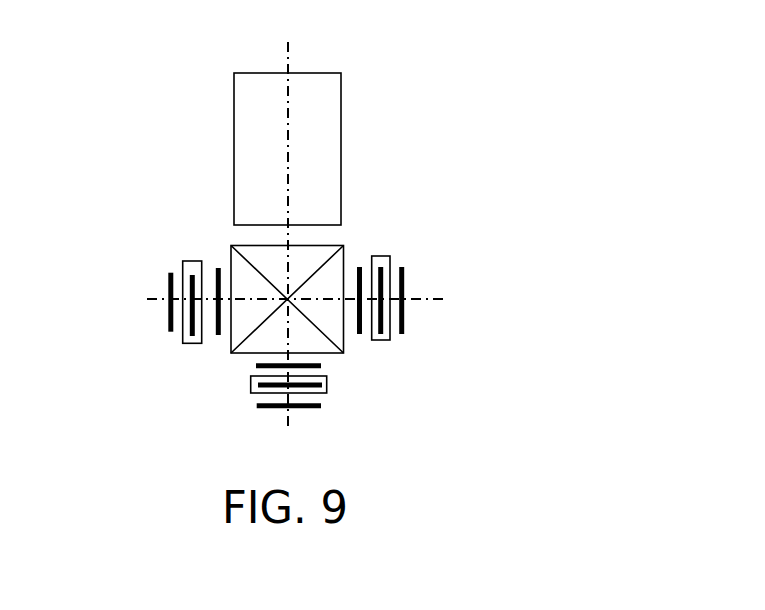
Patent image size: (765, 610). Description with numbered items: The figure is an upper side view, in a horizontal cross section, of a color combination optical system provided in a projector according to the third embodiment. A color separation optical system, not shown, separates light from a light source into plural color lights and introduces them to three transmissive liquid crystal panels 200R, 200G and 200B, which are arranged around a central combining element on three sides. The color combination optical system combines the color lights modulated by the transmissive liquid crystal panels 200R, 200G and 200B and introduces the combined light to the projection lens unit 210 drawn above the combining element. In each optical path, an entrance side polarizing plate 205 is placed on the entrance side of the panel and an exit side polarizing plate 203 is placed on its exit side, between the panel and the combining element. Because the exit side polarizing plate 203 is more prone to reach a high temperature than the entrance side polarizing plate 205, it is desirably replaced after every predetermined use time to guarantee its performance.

The projection lens unit 210 is at (307, 92).
The exit side polarizing plate 203 is at (288, 365).
The entrance side polarizing plate 205 is at (171, 274).
The transmissive liquid crystal panel 200B is at (185, 344).
The transmissive liquid crystal panel 200R is at (372, 256).
The transmissive liquid crystal panel 200G is at (327, 392).